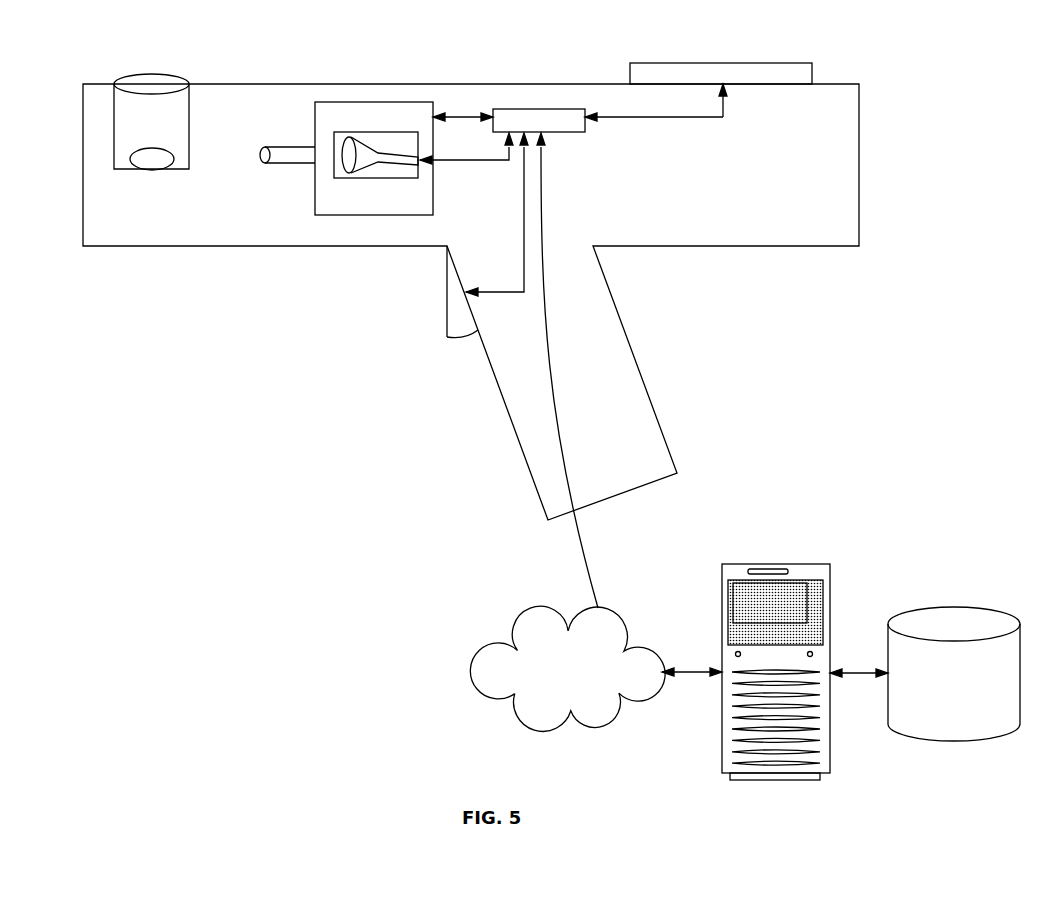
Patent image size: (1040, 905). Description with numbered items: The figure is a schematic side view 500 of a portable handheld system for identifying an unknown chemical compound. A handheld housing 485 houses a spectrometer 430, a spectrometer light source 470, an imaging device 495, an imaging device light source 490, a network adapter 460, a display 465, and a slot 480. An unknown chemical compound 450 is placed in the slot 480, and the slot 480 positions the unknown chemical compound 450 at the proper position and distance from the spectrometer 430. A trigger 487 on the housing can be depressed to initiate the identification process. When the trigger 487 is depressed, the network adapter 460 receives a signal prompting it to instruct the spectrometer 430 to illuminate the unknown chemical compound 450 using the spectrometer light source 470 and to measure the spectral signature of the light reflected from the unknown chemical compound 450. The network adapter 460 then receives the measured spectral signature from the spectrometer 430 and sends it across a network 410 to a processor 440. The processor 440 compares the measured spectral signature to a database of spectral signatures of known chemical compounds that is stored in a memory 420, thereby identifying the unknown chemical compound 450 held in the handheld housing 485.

The network 410 is at (478, 670).
The memory 420 is at (951, 607).
The spectrometer 430 is at (325, 215).
The processor 440 is at (770, 564).
The unknown chemical compound 450 is at (172, 167).
The network adapter 460 is at (535, 108).
The display 465 is at (813, 68).
The spectrometer light source 470 is at (273, 147).
The slot 480 is at (115, 83).
The handheld housing 485 is at (122, 246).
The trigger 487 is at (443, 325).
The imaging device light source 490 is at (372, 167).
The imaging device 495 is at (353, 133).
The side view 500 is at (286, 766).